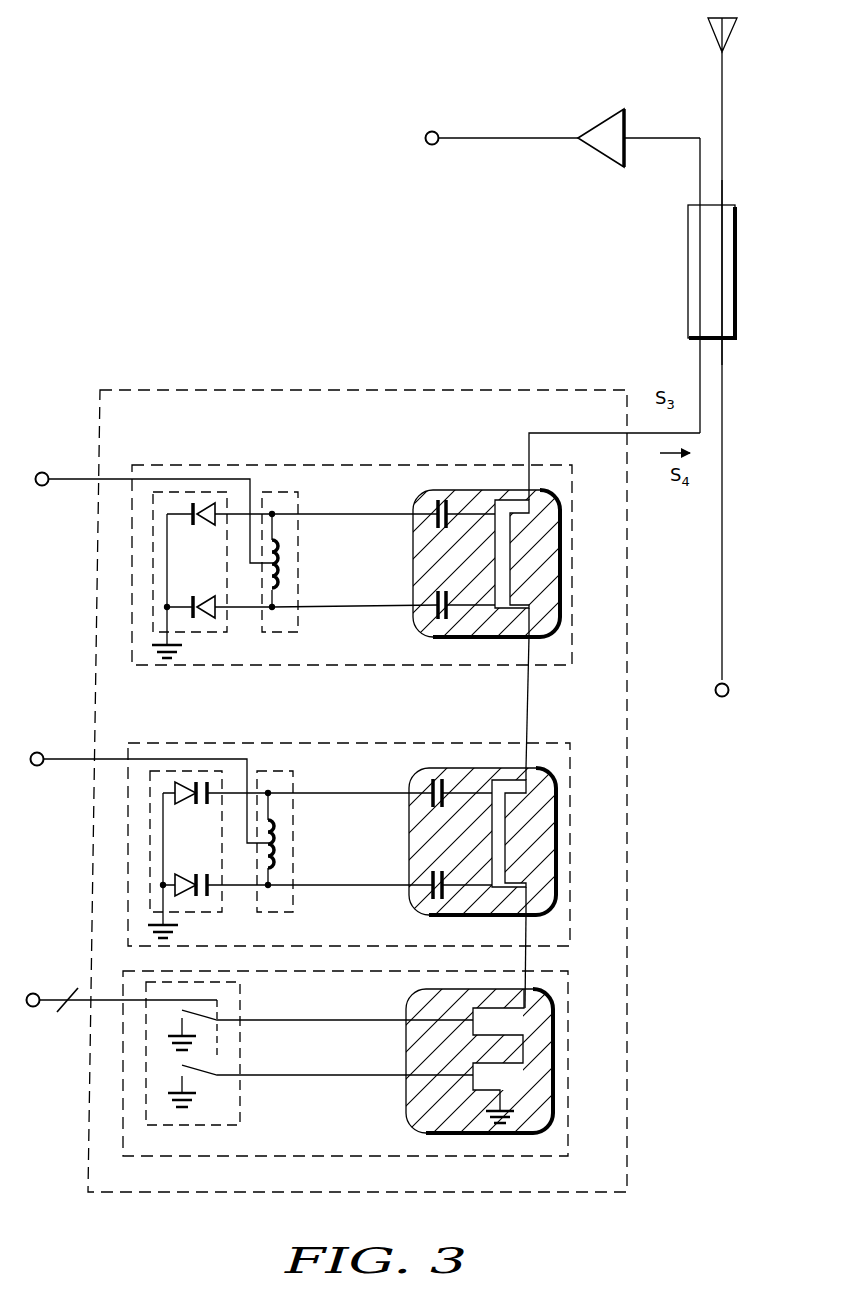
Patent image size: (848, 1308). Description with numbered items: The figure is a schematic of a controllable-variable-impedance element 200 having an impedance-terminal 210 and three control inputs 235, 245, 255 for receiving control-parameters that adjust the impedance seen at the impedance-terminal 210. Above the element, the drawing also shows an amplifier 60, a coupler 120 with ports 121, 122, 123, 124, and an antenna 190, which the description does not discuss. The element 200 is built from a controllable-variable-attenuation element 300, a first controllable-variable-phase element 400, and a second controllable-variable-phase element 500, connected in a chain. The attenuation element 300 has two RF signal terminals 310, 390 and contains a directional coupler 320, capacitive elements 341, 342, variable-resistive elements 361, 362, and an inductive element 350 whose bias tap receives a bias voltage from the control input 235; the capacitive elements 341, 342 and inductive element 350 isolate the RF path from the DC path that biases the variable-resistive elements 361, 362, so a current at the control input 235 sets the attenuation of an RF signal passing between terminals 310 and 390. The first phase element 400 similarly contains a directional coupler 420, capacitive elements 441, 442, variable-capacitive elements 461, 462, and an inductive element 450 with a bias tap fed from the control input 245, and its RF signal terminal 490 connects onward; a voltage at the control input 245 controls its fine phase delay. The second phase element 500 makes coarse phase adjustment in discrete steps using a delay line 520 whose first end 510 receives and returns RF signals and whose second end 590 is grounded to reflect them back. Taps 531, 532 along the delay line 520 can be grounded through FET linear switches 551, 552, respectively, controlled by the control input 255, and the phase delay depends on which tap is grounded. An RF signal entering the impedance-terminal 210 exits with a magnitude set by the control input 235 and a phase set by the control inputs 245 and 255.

The amplifier 60 is at (593, 120).
The directional coupler 120 is at (738, 270).
The coupler port 121 is at (724, 351).
The coupler port 122 is at (724, 186).
The coupler port 123 is at (698, 188).
The coupler port 124 is at (698, 352).
The antenna 190 is at (738, 28).
The controllable-variable-impedance element 200 is at (627, 880).
The impedance-terminal 210 is at (652, 436).
The control input 235 is at (65, 483).
The control input 245 is at (60, 763).
The control input 255 is at (48, 1004).
The controllable-variable-attenuation element 300 is at (394, 465).
The RF signal terminal 310 is at (533, 446).
The directional coupler 320 is at (469, 490).
The capacitive element 341 is at (432, 525).
The capacitive element 342 is at (430, 616).
The inductive element 350 is at (298, 561).
The variable-resistive element 361 is at (203, 525).
The variable-resistive element 362 is at (203, 618).
The RF signal terminal 390 is at (533, 650).
The first controllable-variable-phase element 400 is at (392, 743).
The directional coupler 420 is at (467, 768).
The capacitive element 441 is at (428, 803).
The capacitive element 442 is at (428, 896).
The inductive element 450 is at (294, 842).
The variable-capacitive element 461 is at (197, 805).
The variable-capacitive element 462 is at (197, 897).
The RF signal terminal 490 is at (528, 928).
The second controllable-variable-phase element 500 is at (230, 1156).
The first end of the delay line 510 is at (524, 982).
The delay line 520 is at (481, 1093).
The tap 531 is at (440, 1012).
The tap 532 is at (438, 1080).
The FET linear switch 551 is at (200, 1021).
The FET linear switch 552 is at (200, 1076).
The second end of the delay line 590 is at (520, 1133).